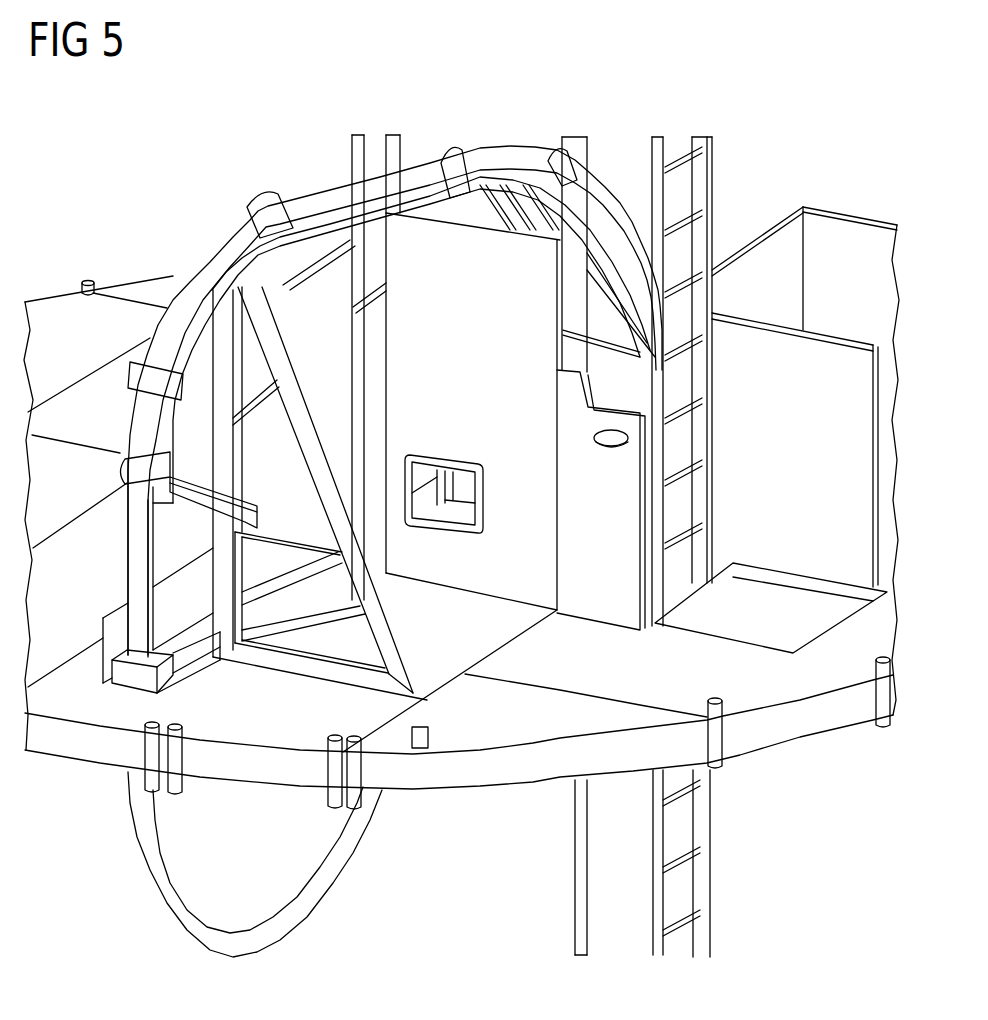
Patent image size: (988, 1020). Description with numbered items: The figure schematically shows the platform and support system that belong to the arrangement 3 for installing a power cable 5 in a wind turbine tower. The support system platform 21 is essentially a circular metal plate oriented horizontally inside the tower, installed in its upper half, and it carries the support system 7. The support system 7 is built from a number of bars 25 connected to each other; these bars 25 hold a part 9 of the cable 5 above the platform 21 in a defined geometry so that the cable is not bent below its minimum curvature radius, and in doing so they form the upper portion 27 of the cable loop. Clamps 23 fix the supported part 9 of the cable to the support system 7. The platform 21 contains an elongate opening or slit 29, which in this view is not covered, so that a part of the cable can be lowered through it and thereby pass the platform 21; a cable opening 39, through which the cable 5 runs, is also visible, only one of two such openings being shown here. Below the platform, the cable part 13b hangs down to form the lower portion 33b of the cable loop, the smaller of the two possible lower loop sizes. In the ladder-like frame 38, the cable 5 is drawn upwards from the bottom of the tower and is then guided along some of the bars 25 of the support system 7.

The arrangement 3 is at (832, 172).
The power cable 5 is at (655, 932).
The support system 7 is at (110, 158).
The part of the cable 9 is at (310, 196).
The cable part 13b is at (277, 923).
The support system platform 21 is at (496, 767).
The clamps 23 is at (250, 200).
The bars 25 is at (573, 273).
The upper portion of the cable loop 27 is at (110, 402).
The elongate opening or slit 29 is at (180, 648).
The lower portion of the cable loop 33b is at (356, 898).
The ladder-like frame 38 is at (707, 825).
The cable opening 39 is at (132, 672).